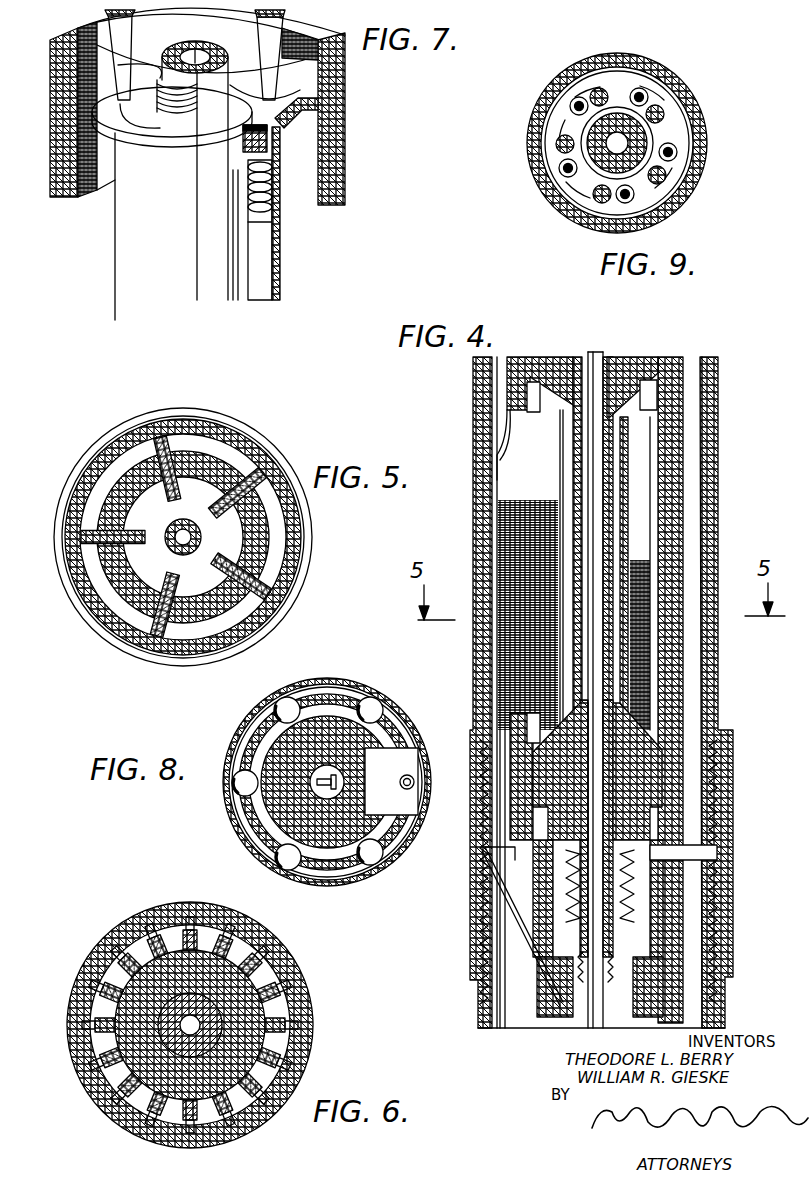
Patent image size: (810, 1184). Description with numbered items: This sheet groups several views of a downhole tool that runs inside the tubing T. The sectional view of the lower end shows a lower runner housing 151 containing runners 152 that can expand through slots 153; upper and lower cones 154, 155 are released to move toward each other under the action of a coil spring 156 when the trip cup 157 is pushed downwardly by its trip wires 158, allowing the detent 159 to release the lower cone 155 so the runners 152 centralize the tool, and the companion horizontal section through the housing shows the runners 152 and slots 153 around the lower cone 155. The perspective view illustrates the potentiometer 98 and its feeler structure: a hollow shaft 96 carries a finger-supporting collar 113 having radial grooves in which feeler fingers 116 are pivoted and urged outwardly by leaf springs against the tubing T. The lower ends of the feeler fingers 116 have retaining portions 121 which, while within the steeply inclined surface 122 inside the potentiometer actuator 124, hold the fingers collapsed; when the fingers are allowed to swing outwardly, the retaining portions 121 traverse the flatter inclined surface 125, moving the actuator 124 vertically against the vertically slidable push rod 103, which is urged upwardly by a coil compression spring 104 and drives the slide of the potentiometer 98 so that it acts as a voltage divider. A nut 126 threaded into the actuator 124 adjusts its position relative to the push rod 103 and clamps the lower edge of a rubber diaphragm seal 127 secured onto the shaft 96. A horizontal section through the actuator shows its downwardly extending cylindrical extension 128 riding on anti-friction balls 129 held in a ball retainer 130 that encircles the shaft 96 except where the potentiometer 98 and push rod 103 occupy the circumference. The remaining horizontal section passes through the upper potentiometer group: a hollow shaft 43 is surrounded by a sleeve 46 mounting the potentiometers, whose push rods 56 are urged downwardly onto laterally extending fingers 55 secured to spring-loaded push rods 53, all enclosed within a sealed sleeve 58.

In FIG. 7, the tubing T is at (330, 118).
In FIG. 6, the tubing T is at (312, 1001).
In FIG. 4, the tubing T is at (712, 442).
In FIG. 9, the hollow shaft 43 is at (616, 122).
In FIG. 9, the sleeve 46 is at (674, 138).
In FIG. 9, the push rods 53 is at (664, 108).
In FIG. 9, the laterally extending finger 55 is at (570, 113).
In FIG. 9, the push rod of the potentiometer 56 is at (641, 92).
In FIG. 9, the sealed sleeve 58 is at (700, 155).
In FIG. 7, the hollow shaft 96 is at (290, 27).
In FIG. 6, the hollow shaft 96 is at (170, 1040).
In FIG. 7, the potentiometer 98 is at (253, 268).
In FIG. 8, the potentiometer 98 is at (408, 752).
In FIG. 7, the push rod 103 is at (270, 207).
In FIG. 8, the push rod 103 is at (415, 790).
In FIG. 7, the coil compression spring 104 is at (278, 187).
In FIG. 6, the finger-supporting collar 113 is at (228, 1003).
In FIG. 7, the feeler fingers 116 is at (113, 25).
In FIG. 6, the feeler fingers 116 is at (135, 957).
In FIG. 7, the retaining portions 121 is at (125, 100).
In FIG. 7, the steeply inclined surface 122 is at (148, 140).
In FIG. 7, the potentiometer actuator 124 is at (330, 97).
In FIG. 7, the flatter inclined surface 125 is at (293, 88).
In FIG. 7, the nut 126 is at (270, 147).
In FIG. 7, the rubber diaphragm seal 127 is at (212, 170).
In FIG. 8, the cylindrical extension 128 is at (373, 668).
In FIG. 8, the balls 129 is at (276, 707).
In FIG. 8, the ball retainer 130 is at (258, 823).
In FIG. 4, the lower runner housing 151 is at (510, 374).
In FIG. 5, the runners 152 is at (268, 584).
In FIG. 4, the runners 152 is at (500, 508).
In FIG. 5, the slots 153 is at (150, 457).
In FIG. 4, the slots 153 is at (508, 418).
In FIG. 4, the upper cone 154 is at (642, 357).
In FIG. 5, the lower cone 155 is at (213, 534).
In FIG. 4, the lower cone 155 is at (640, 772).
In FIG. 4, the coil spring 156 is at (630, 889).
In FIG. 4, the trip cup 157 is at (650, 965).
In FIG. 4, the trip wires 158 is at (518, 933).
In FIG. 4, the detent 159 is at (717, 853).